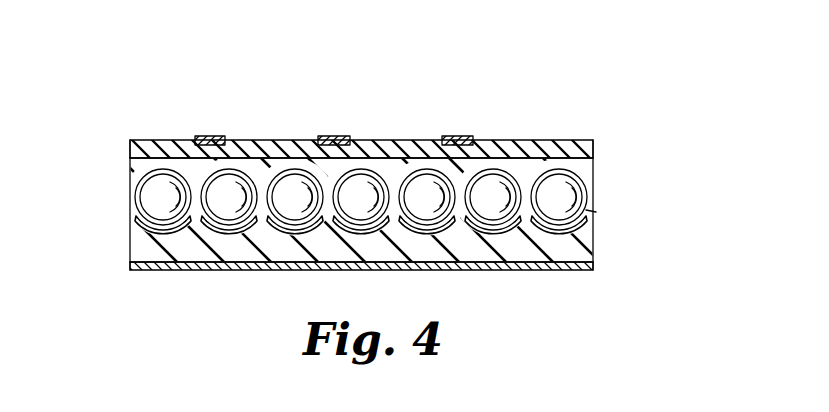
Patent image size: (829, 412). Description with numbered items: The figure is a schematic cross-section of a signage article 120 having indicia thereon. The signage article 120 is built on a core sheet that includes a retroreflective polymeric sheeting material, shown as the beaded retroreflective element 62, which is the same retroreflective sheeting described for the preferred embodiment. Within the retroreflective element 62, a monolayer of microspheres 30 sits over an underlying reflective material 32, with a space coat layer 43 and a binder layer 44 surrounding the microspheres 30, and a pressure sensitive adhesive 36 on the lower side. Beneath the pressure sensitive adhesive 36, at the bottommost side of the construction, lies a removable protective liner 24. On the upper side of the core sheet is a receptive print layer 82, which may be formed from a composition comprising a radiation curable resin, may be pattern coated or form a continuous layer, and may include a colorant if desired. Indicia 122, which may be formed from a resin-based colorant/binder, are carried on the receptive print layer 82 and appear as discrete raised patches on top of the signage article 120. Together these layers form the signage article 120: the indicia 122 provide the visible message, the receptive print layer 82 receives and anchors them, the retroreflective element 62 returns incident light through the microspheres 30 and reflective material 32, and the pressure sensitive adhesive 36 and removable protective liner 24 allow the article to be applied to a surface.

The indicia 122 is at (455, 136).
The receptive print layer 82 is at (593, 146).
The binder layer 44 is at (593, 160).
The microspheres 30 is at (142, 190).
The space coat layer 43 is at (596, 211).
The removable protective liner 24 is at (598, 266).
The retroreflective element 62 is at (350, 213).
The reflective material 32 is at (341, 234).
The signage article 120 is at (244, 272).
The pressure sensitive adhesive 36 is at (371, 262).